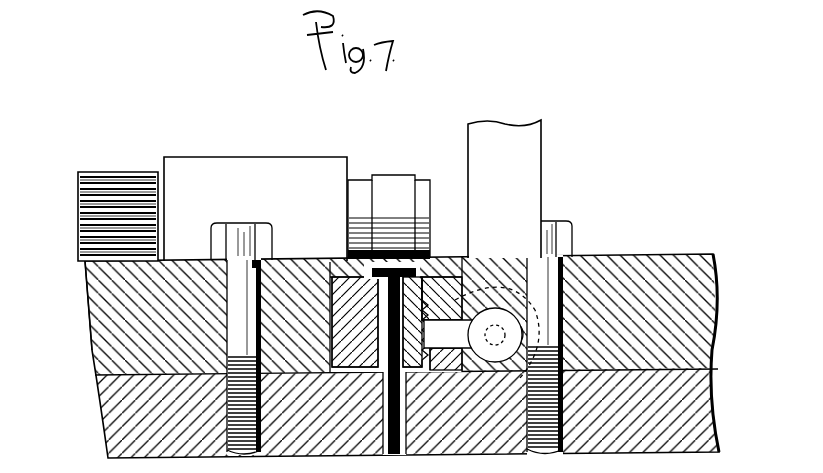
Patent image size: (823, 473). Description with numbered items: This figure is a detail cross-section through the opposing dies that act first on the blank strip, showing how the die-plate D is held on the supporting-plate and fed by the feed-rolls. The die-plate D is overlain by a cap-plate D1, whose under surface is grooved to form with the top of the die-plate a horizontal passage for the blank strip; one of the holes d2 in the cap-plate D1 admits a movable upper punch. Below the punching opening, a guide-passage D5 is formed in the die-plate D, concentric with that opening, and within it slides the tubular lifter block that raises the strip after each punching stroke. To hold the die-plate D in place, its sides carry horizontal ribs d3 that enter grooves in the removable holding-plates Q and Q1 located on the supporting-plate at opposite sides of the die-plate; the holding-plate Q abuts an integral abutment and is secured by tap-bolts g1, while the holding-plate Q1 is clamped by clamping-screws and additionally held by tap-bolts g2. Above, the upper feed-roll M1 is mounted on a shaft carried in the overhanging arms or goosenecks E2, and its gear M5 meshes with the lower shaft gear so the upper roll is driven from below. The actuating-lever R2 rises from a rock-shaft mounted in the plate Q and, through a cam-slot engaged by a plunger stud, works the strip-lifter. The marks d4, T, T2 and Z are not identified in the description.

The holding-plate Q is at (690, 309).
The holding-plate Q1 is at (130, 338).
The tap-bolts g2 is at (272, 253).
The tap-bolts g1 is at (573, 250).
The intermeshing gear M5 is at (126, 173).
The overhanging arms or goosenecks E2 is at (255, 209).
The upper feed-roll M1 is at (394, 195).
The actuating-lever R2 is at (504, 188).
The die-plate D is at (470, 278).
The cap-plate D1 is at (440, 278).
The guide-passage D5 is at (386, 400).
The hole d2 is at (336, 300).
The horizontal rib or projection d3 is at (470, 308).
The upper support d4 is at (445, 298).
The pivot arm T is at (481, 332).
The arm lower end T2 is at (365, 372).
The pivot pin Z is at (468, 438).